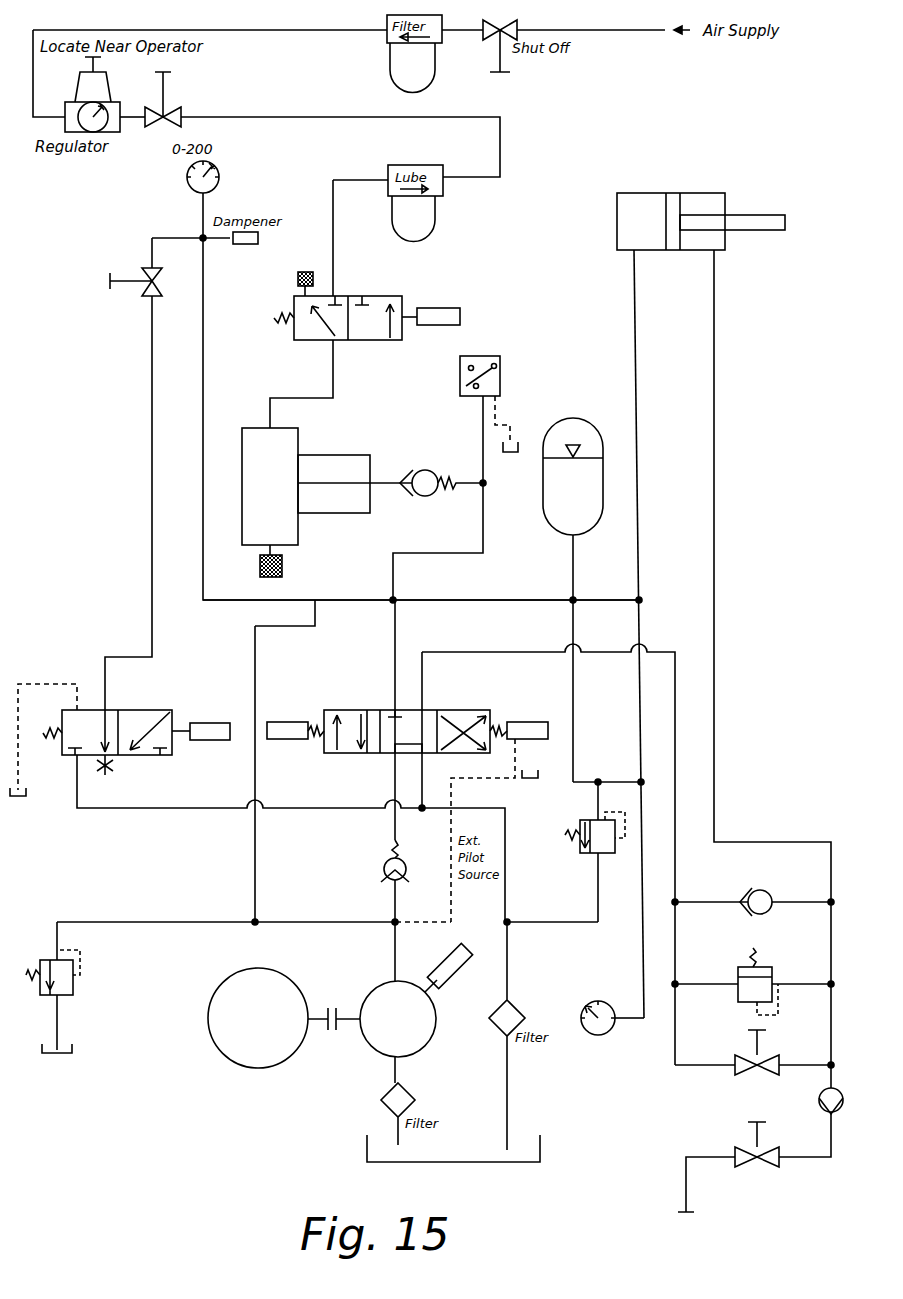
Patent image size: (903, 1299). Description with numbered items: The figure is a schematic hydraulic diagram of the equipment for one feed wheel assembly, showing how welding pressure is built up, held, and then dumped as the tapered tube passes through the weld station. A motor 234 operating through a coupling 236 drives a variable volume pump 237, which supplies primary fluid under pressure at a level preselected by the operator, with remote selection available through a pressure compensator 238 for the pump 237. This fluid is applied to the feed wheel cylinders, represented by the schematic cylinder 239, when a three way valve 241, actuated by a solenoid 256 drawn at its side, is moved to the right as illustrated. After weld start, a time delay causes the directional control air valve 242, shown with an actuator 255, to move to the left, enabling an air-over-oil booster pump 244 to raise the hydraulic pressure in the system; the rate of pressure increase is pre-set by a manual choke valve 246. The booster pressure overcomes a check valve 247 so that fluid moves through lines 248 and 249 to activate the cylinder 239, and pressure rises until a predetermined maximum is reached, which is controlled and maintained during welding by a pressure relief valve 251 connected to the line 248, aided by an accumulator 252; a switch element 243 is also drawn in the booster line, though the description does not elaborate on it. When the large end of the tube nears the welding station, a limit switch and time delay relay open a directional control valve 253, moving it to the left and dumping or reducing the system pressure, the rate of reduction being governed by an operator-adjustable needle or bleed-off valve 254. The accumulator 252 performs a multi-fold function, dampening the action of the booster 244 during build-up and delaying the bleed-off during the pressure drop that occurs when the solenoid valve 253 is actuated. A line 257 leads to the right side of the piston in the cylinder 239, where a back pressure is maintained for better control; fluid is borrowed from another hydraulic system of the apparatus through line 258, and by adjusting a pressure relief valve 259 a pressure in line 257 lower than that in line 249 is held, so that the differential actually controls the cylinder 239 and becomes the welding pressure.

The motor 234 is at (218, 1052).
The coupling 236 is at (327, 1032).
The variable volume pump 237 is at (372, 985).
The pressure compensator 238 is at (452, 970).
The schematic cylinder 239 is at (617, 222).
The three way valve 241 is at (362, 710).
The directional control air valve 242 is at (312, 342).
The pressure switch 243 is at (487, 360).
The air-over-oil booster pump 244 is at (340, 448).
The manual choke valve 246 is at (175, 110).
The check valve 247 is at (426, 470).
The line 248 is at (483, 598).
The line 249 is at (635, 358).
The pressure relief valve 251 is at (587, 855).
The accumulator 252 is at (580, 420).
The directional control valve 253 is at (145, 710).
The bleed-off valve 254 is at (145, 290).
The solenoid 255 is at (445, 313).
The solenoid 256 is at (533, 722).
The line 257 is at (716, 360).
The line 258 is at (686, 1183).
The pressure relief valve 259 is at (773, 970).